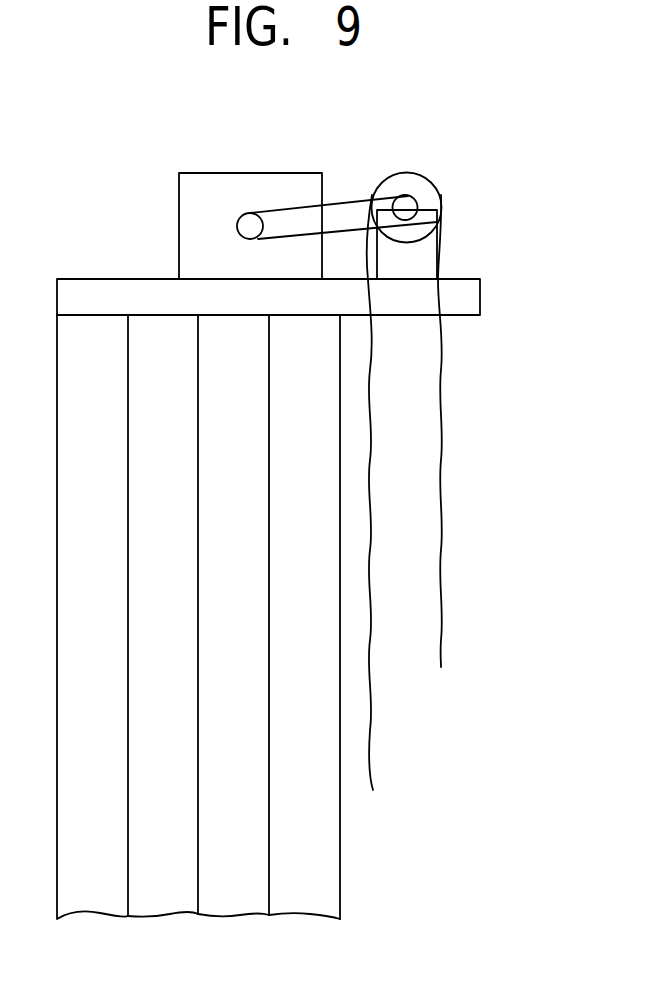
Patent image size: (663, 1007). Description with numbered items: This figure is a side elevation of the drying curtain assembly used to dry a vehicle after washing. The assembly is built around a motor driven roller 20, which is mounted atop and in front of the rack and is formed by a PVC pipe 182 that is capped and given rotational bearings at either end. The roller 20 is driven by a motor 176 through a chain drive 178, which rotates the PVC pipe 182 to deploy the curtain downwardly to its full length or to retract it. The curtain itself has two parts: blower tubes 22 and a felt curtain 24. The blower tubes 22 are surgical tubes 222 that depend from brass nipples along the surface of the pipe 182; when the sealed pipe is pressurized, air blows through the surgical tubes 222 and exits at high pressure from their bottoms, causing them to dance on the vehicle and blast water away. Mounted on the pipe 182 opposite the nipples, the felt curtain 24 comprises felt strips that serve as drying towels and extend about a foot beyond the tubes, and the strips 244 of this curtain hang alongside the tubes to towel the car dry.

The motor driven roller 20 is at (460, 222).
The blower tubes 22 is at (453, 425).
The felt curtain 24 is at (355, 700).
The motor 176 is at (220, 197).
The chain drive 178 is at (345, 201).
The PVC pipe 182 is at (438, 188).
The surgical tubes 222 is at (442, 496).
The inner web portion 244 is at (371, 748).